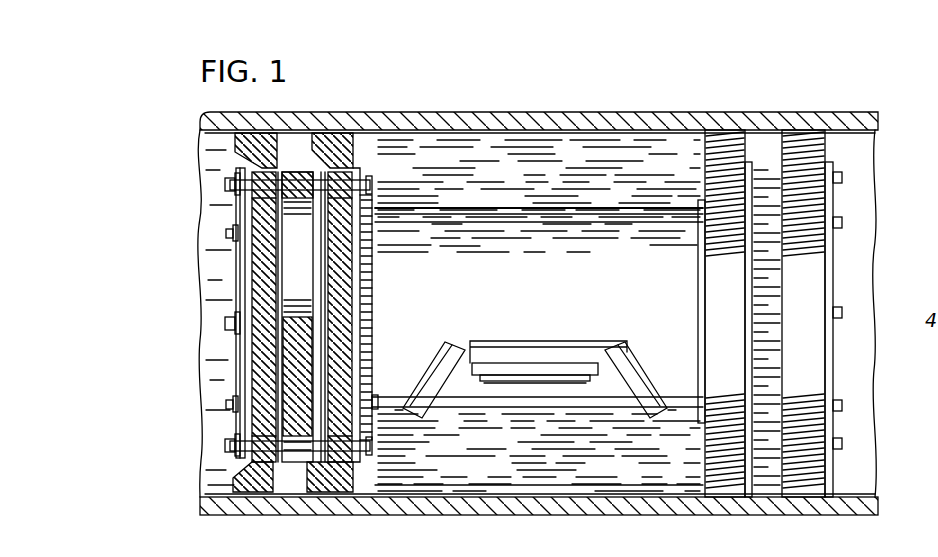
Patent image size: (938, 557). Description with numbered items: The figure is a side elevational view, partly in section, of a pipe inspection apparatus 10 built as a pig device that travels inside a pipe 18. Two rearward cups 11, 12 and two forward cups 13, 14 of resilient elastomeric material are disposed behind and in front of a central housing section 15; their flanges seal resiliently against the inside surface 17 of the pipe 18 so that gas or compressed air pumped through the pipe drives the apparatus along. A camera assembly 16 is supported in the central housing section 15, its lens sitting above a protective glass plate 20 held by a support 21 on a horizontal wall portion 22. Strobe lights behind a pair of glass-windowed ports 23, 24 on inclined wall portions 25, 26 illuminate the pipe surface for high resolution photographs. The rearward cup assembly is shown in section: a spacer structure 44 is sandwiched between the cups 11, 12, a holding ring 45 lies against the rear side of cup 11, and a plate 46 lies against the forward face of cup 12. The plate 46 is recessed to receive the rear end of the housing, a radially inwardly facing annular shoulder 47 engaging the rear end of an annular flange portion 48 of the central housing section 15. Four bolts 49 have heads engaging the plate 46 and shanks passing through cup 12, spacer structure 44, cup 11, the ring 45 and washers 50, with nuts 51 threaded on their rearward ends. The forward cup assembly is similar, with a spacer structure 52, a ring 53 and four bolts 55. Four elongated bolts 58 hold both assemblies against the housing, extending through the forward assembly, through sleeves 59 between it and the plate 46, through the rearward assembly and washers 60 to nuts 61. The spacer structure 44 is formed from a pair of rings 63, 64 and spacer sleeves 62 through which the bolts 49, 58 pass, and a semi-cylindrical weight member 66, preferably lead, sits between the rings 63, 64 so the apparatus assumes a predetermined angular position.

The pipe inspection apparatus 10 is at (538, 305).
The rearward cup 11 is at (258, 492).
The rearward cup 12 is at (325, 492).
The forward cup 13 is at (722, 497).
The forward cup 14 is at (808, 487).
The central housing section 15 is at (531, 209).
The camera assembly 16 is at (583, 381).
The inside surface 17 is at (603, 487).
The pipe 18 is at (526, 511).
The protective glass plate 20 is at (533, 381).
The support 21 is at (568, 362).
The horizontal wall portion 22 is at (476, 338).
The port 23 is at (639, 414).
The port 24 is at (433, 408).
The inclined wall portion 25 is at (664, 416).
The inclined wall portion 26 is at (403, 410).
The spacer structure 44 is at (298, 170).
The holding ring 45 is at (240, 200).
The plate 46 is at (443, 246).
The annular shoulder 47 is at (379, 405).
The annular flange portion 48 is at (377, 320).
The bolt 49 is at (375, 183).
The washer 50 is at (230, 180).
The nut 51 is at (236, 190).
The spacer structure 52 is at (770, 177).
The ring 53 is at (840, 165).
The bolt 55 is at (845, 178).
The elongated bolt 58 is at (848, 222).
The sleeve 59 is at (547, 401).
The washer 60 is at (235, 238).
The nut 61 is at (233, 225).
The spacer sleeve 62 is at (303, 205).
The ring 63 is at (283, 268).
The ring 64 is at (354, 279).
The weight member 66 is at (296, 362).